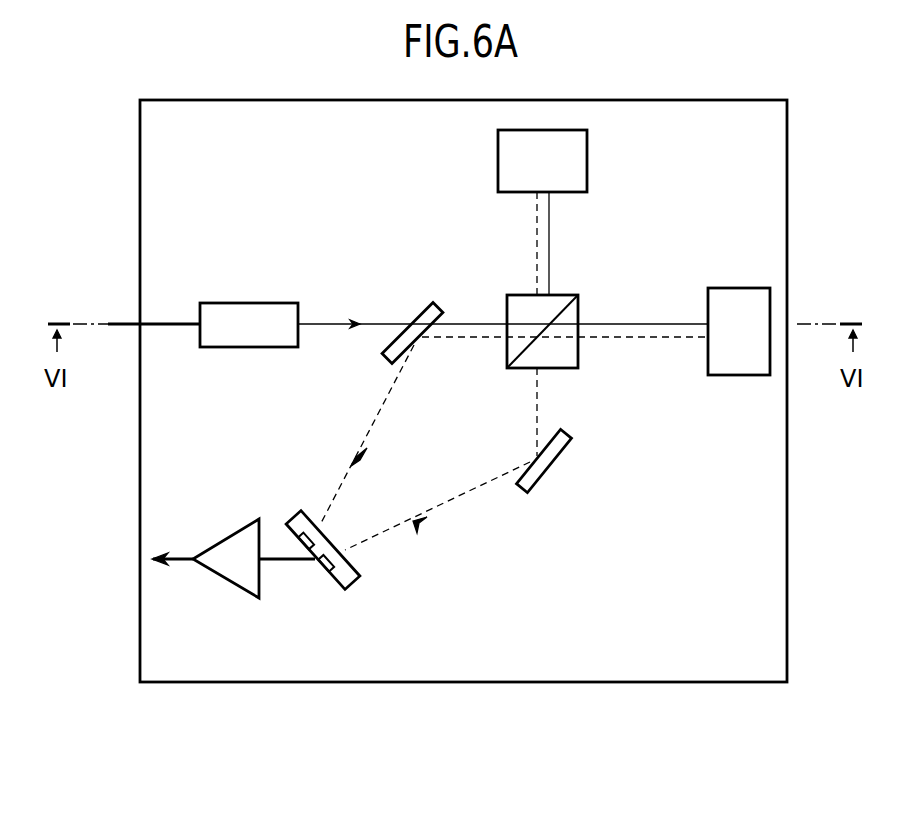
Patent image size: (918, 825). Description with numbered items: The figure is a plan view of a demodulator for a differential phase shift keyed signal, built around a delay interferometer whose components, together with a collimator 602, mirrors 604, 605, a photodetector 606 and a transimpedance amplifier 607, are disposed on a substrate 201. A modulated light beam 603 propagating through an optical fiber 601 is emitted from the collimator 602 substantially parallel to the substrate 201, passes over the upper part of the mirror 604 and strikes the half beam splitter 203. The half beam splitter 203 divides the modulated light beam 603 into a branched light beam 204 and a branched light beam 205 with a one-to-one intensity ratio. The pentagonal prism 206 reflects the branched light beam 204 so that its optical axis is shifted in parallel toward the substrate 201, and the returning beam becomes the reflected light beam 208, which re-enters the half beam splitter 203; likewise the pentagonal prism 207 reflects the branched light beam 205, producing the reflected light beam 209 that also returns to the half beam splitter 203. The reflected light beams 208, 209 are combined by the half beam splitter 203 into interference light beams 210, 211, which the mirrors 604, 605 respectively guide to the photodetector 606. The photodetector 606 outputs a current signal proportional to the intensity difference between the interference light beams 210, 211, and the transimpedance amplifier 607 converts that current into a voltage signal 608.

The substrate 201 is at (140, 487).
The half beam splitter 203 is at (564, 368).
The branched light beam 204 is at (655, 324).
The branched light beam 205 is at (549, 251).
The pentagonal prism 206 is at (740, 375).
The pentagonal prism 207 is at (498, 162).
The reflected light beam 208 is at (653, 340).
The reflected light beam 209 is at (537, 250).
The interference light beam 210 is at (460, 339).
The interference light beam 211 is at (535, 426).
The optical fiber 601 is at (170, 324).
The collimator 602 is at (250, 303).
The modulated light beam 603 is at (318, 323).
The mirror 604 is at (422, 310).
The mirror 605 is at (556, 468).
The photodetector 606 is at (358, 584).
The transimpedance amplifier 607 is at (226, 583).
The voltage signal 608 is at (178, 556).